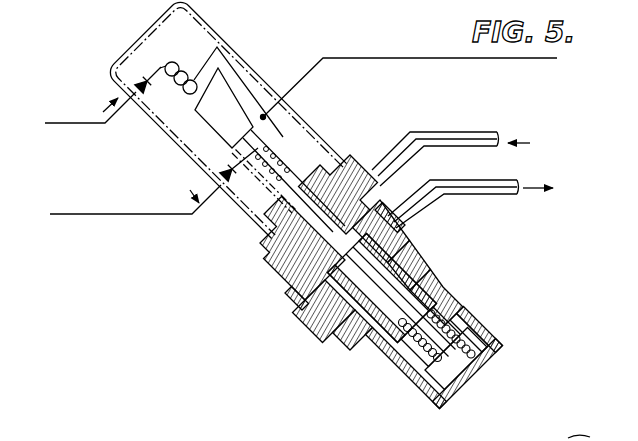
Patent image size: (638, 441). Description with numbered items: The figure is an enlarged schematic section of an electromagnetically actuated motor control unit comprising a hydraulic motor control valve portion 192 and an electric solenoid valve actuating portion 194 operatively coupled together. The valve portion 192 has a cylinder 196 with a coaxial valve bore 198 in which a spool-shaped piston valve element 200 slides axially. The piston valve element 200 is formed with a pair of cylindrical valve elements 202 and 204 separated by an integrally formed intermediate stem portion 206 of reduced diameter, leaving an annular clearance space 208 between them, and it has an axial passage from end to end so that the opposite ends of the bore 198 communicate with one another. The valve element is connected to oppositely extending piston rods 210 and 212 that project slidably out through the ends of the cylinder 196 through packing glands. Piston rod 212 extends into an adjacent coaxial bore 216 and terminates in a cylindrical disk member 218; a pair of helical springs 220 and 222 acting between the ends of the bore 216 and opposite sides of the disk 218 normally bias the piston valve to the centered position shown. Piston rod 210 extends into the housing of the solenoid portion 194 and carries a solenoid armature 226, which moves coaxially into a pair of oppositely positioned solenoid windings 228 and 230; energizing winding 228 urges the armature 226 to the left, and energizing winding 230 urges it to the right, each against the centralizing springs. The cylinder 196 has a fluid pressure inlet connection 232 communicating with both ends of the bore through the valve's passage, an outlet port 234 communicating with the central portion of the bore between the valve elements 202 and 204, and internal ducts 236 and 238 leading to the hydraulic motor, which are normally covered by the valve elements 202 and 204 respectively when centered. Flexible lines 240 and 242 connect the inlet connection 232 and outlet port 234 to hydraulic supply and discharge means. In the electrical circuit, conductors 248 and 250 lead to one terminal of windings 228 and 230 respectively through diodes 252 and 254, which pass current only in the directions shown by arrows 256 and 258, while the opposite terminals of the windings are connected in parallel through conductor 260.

The hydraulic motor control valve portion 192 is at (468, 292).
The electric solenoid valve actuating portion 194 is at (270, 78).
The cylinder 196 is at (443, 274).
The valve bore 198 is at (283, 270).
The piston valve element 200 is at (385, 207).
The cylindrical valve element 202 is at (358, 168).
The cylindrical valve element 204 is at (402, 263).
The intermediate stem portion 206 is at (315, 313).
The annular clearance space 208 is at (333, 322).
The piston rod 210 is at (267, 218).
The piston rod 212 is at (467, 310).
The bore 216 is at (380, 353).
The cylindrical disk member 218 is at (487, 364).
The helical spring 220 is at (420, 407).
The helical spring 222 is at (413, 343).
The solenoid armature 226 is at (215, 120).
The solenoid winding 228 is at (200, 63).
The solenoid winding 230 is at (300, 135).
The fluid pressure inlet connection 232 is at (400, 180).
The outlet port 234 is at (405, 236).
The internal duct 236 is at (298, 310).
The internal duct 238 is at (350, 318).
The flexible line 240 is at (475, 136).
The flexible line 242 is at (503, 176).
The conductor 248 is at (68, 122).
The conductor 250 is at (106, 213).
The diode 252 is at (138, 78).
The diode 254 is at (222, 175).
The arrow 256 is at (110, 100).
The arrow 258 is at (192, 194).
The conductor 260 is at (452, 58).